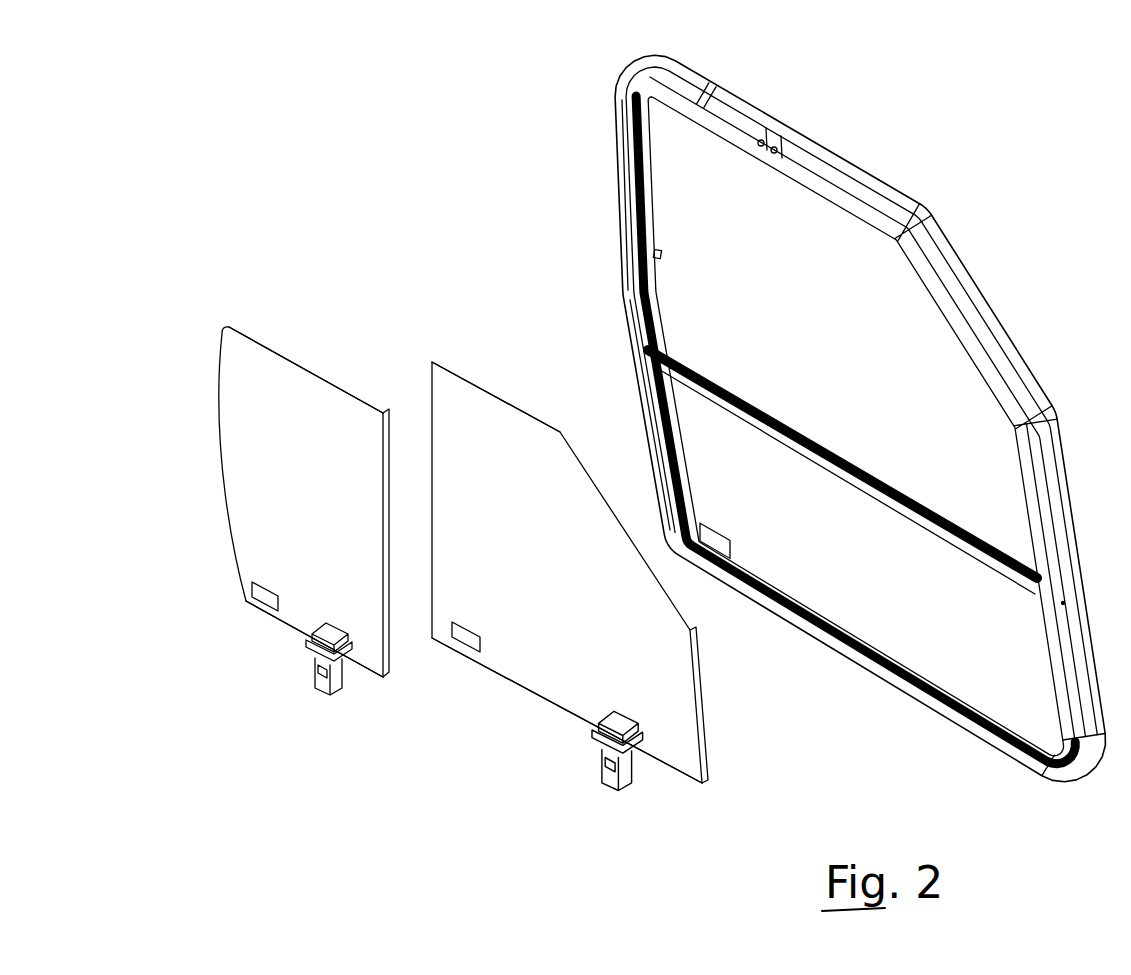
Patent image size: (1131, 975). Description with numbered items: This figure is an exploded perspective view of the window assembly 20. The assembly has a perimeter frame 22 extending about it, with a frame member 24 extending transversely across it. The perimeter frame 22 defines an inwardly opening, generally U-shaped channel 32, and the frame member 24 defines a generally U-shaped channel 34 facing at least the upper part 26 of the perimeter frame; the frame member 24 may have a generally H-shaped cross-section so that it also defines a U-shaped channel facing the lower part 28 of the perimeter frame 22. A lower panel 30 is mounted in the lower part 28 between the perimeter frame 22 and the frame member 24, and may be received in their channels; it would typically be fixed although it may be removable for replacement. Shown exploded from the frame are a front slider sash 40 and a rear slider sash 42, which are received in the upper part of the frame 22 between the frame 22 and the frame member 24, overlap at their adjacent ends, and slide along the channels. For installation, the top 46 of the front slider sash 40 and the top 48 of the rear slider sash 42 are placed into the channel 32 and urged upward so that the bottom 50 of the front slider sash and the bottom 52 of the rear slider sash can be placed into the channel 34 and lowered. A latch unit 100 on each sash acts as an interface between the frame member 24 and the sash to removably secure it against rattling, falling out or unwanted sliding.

The window assembly 20 is at (583, 0).
The perimeter frame 22 is at (893, 183).
The frame member 24 is at (892, 508).
The upper part 26 is at (602, 95).
The lower part 28 is at (633, 378).
The lower panel 30 is at (850, 580).
The channel 32 is at (656, 257).
The channel 34 is at (806, 436).
The front slider sash 40 is at (303, 508).
The rear slider sash 42 is at (575, 642).
The top of the front slider sash 46 is at (297, 353).
The top of the rear slider sash 48 is at (487, 391).
The bottom of the front slider sash 50 is at (271, 623).
The bottom of the rear slider sash 52 is at (510, 682).
The latch unit 100 is at (325, 697).